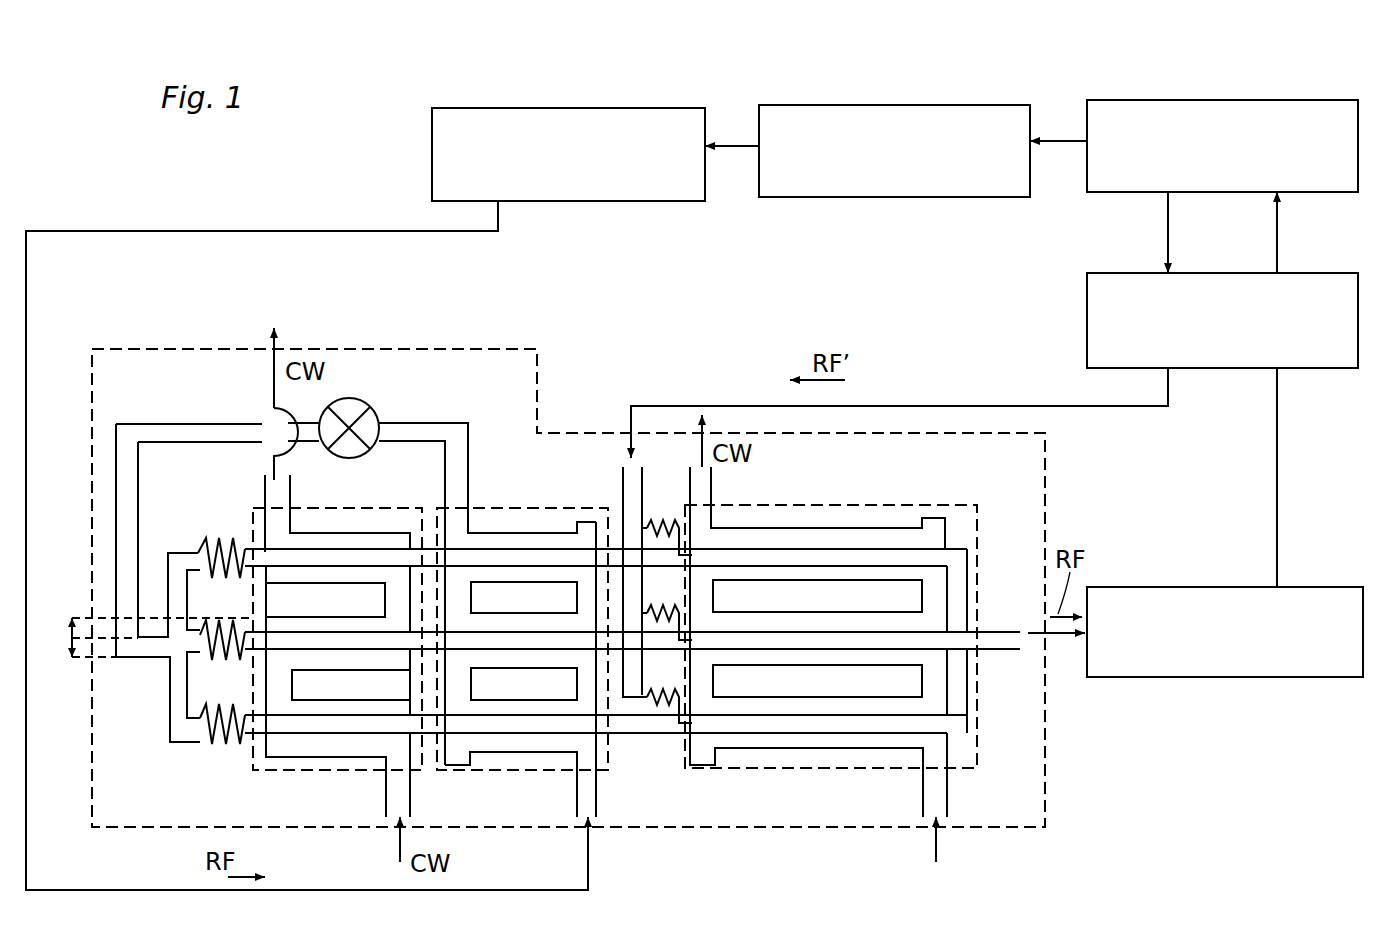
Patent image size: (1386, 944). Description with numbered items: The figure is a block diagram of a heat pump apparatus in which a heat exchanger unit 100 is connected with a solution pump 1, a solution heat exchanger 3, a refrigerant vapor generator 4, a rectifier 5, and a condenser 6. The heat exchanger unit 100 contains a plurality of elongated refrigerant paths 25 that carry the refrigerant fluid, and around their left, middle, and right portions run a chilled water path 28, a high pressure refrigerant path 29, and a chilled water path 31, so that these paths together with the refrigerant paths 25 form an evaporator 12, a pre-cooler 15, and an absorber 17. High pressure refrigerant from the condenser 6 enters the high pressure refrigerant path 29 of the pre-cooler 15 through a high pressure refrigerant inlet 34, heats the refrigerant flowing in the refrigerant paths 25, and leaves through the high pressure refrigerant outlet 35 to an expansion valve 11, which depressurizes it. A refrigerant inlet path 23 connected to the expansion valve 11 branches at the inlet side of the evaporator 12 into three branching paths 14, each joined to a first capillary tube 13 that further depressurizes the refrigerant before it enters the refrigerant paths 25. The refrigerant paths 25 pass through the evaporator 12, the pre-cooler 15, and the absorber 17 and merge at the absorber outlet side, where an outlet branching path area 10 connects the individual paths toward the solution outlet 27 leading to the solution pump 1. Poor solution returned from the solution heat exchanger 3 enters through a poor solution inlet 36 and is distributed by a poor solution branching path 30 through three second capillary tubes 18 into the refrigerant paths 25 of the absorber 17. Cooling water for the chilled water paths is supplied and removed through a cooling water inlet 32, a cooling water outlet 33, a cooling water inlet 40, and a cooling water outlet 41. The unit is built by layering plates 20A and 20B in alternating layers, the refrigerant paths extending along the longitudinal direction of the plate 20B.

The solution pump 1 is at (1312, 587).
The solution heat exchanger 3 is at (1302, 273).
The refrigerant vapor generator 4 is at (1224, 100).
The rectifier 5 is at (784, 104).
The condenser 6 is at (472, 108).
The outlet branching path area 10 is at (968, 733).
The expansion valve 11 is at (365, 402).
The evaporator 12 is at (292, 772).
The first capillary tubes 13 is at (222, 768).
The branching paths 14 is at (172, 745).
The pre-cooler 15 is at (491, 770).
The absorber 17 is at (750, 770).
The second capillary tubes 18 is at (652, 517).
The plate 20A is at (69, 614).
The plate 20B is at (72, 658).
The refrigerant inlet path 23 is at (140, 497).
The refrigerant paths 25 is at (905, 720).
The solution outlet 27 is at (1006, 627).
The chilled water path 28 is at (325, 622).
The high pressure refrigerant path 29 is at (498, 537).
The poor solution branching path 30 is at (635, 675).
The chilled water path 31 is at (807, 567).
The cooling water inlet 32 is at (415, 808).
The cooling water outlet 33 is at (265, 480).
The high pressure refrigerant inlet 34 is at (600, 805).
The high pressure refrigerant outlet 35 is at (468, 450).
The poor solution inlet 36 is at (622, 470).
The cooling water inlet 40 is at (952, 803).
The cooling water outlet 41 is at (715, 480).
The heat exchanger unit 100 is at (343, 348).